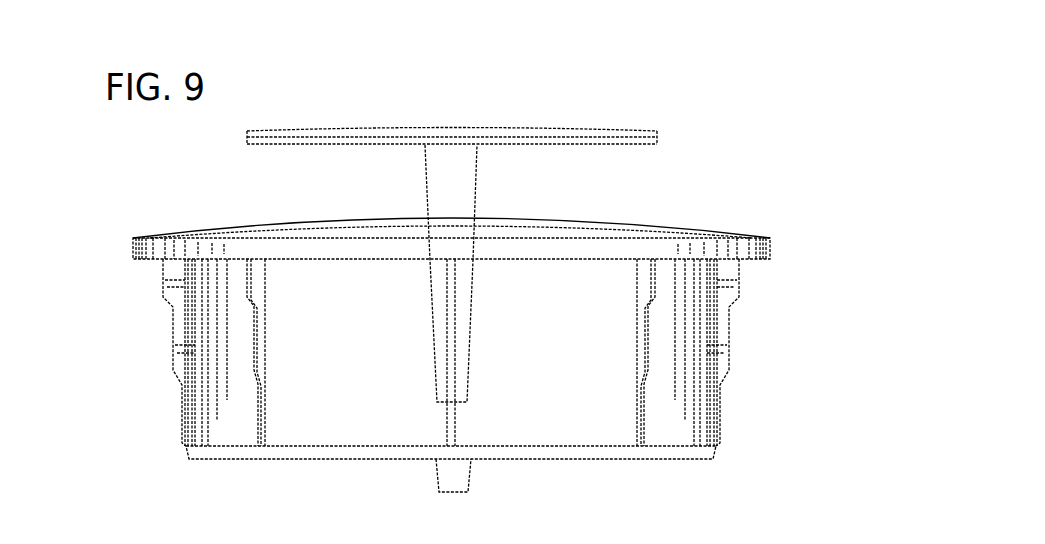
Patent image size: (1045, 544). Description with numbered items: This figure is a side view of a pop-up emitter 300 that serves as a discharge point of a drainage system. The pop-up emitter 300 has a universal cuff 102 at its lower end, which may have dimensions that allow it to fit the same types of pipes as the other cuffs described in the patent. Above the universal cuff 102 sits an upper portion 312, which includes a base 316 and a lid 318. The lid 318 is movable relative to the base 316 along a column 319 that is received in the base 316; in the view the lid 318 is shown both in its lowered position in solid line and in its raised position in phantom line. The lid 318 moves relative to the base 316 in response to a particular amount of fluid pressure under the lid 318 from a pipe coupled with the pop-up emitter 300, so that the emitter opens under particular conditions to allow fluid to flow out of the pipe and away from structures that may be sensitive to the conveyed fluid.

The pop-up emitter 300 is at (692, 168).
The upper portion 312 is at (793, 243).
The base 316 is at (216, 233).
The lid 318 is at (517, 127).
The column 319 is at (426, 177).
The universal cuff 102 is at (754, 353).